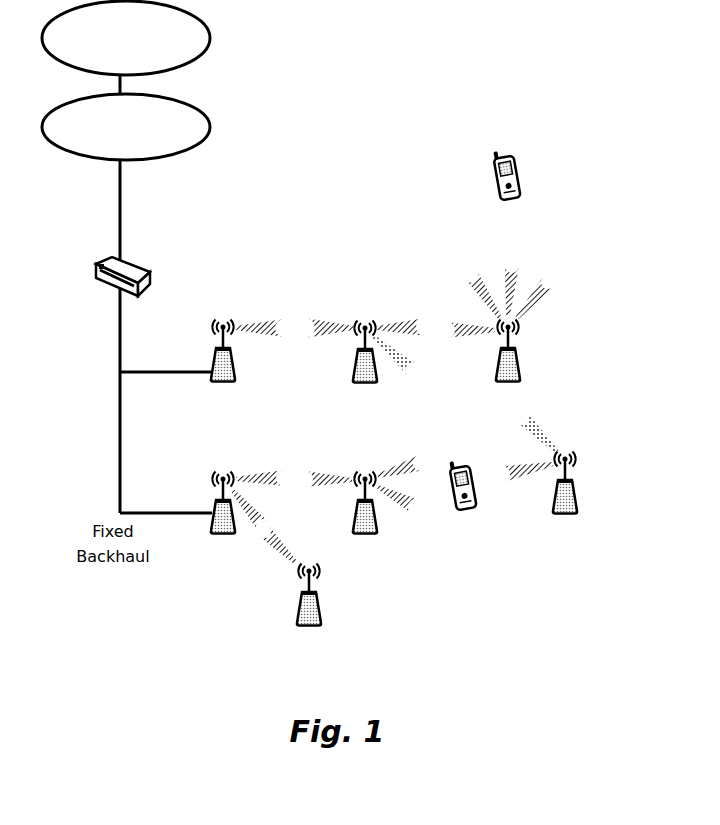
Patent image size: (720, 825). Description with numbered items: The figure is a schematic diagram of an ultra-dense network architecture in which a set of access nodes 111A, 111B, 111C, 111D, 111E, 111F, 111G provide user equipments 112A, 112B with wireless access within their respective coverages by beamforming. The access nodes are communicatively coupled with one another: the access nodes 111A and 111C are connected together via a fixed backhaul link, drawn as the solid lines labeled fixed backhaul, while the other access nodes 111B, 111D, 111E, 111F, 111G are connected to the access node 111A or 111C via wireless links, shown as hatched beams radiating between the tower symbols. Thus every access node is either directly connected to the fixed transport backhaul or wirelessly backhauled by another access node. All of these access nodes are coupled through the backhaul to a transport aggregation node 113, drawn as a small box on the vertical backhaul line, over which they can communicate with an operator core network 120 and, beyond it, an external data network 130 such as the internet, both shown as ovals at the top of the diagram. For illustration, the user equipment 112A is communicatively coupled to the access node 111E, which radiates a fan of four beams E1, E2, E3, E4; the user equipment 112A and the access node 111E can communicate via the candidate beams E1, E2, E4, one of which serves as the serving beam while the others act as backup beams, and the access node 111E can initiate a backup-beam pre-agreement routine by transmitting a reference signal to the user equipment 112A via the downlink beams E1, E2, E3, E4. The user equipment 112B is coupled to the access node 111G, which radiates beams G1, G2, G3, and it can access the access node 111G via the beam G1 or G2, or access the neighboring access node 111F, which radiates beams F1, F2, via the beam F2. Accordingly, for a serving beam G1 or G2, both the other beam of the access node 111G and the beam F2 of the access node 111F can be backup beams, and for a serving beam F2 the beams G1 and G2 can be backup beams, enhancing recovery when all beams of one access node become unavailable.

The external data network 130 is at (126, 38).
The operator core network 120 is at (126, 127).
The transport aggregation node 113 is at (106, 284).
The access node 111A is at (242, 376).
The access node 111B is at (365, 376).
The access node 111C is at (242, 528).
The access node 111D is at (295, 599).
The access node 111E is at (506, 329).
The access node 111F is at (542, 487).
The access node 111G is at (365, 512).
The user equipment 112A is at (529, 171).
The user equipment 112B is at (468, 510).
The beam E1 is at (482, 283).
The beam E2 is at (508, 279).
The beam E3 is at (471, 316).
The beam E4 is at (541, 290).
The beam G1 is at (400, 458).
The beam G2 is at (401, 510).
The beam G3 is at (328, 468).
The beam F1 is at (543, 433).
The beam F2 is at (527, 462).